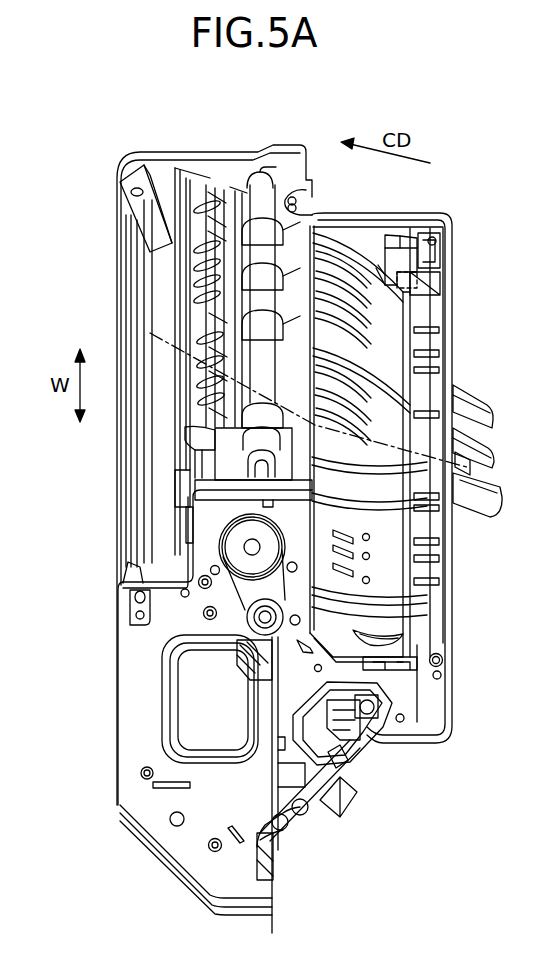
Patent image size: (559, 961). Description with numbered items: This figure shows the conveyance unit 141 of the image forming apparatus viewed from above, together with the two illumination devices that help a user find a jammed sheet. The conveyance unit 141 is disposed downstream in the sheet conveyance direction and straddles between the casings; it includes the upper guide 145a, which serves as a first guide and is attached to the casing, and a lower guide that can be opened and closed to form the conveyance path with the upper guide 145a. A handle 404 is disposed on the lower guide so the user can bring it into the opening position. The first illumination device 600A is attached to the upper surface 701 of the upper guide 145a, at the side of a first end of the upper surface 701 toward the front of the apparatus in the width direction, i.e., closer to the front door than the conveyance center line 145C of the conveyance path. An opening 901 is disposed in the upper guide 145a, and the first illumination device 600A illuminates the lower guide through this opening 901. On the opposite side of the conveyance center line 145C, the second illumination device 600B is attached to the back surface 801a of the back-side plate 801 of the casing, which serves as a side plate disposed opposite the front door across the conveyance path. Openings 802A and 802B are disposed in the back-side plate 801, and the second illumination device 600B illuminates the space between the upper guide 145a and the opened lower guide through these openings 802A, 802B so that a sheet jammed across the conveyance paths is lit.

The conveyance unit 141 is at (110, 337).
The opening 901 is at (388, 236).
The first illumination device 600A is at (440, 248).
The upper surface 701 is at (390, 342).
The upper guide 145a is at (395, 368).
The handle 404 is at (465, 403).
The conveyance center line 145C is at (487, 453).
The opening 802B is at (335, 700).
The opening 802A is at (305, 722).
The back-side plate 801 is at (121, 698).
The back surface 801a is at (121, 760).
The second illumination device 600B is at (350, 757).